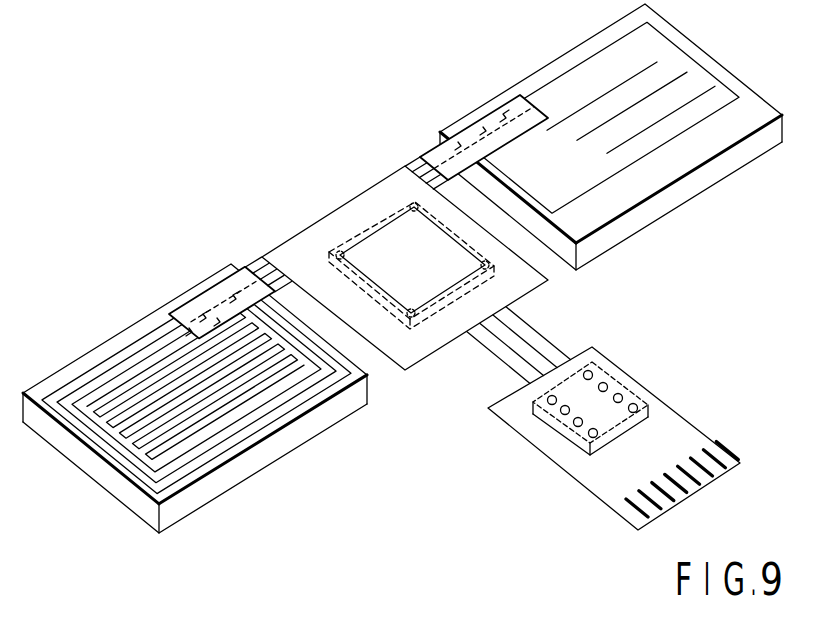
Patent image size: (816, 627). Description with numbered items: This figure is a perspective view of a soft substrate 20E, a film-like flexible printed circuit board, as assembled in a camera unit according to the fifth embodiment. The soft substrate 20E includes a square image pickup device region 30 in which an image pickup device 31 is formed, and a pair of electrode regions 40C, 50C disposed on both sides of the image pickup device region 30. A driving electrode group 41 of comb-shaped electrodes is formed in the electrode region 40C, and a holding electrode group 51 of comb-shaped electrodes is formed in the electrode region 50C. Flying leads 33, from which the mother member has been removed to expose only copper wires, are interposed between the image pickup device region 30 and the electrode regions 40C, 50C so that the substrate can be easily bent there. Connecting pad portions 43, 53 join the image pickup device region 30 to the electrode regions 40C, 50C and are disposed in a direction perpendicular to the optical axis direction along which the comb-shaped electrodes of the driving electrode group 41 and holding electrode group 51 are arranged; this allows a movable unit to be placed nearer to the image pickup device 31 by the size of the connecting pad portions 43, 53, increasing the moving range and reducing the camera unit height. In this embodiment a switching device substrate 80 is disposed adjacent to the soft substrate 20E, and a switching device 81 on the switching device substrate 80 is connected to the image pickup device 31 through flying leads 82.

The soft substrate 20E is at (353, 139).
The image pickup device region 30 is at (375, 200).
The image pickup device 31 is at (384, 250).
The flying leads 33 is at (253, 256).
The electrode region 40C is at (270, 448).
The driving electrode group 41 is at (200, 453).
The connecting pad portion 43 is at (227, 290).
The electrode region 50C is at (597, 213).
The holding electrode group 51 is at (663, 173).
The connecting pad portion 53 is at (510, 125).
The switching device substrate 80 is at (617, 516).
The switching device 81 is at (580, 403).
The flying leads 82 is at (536, 335).